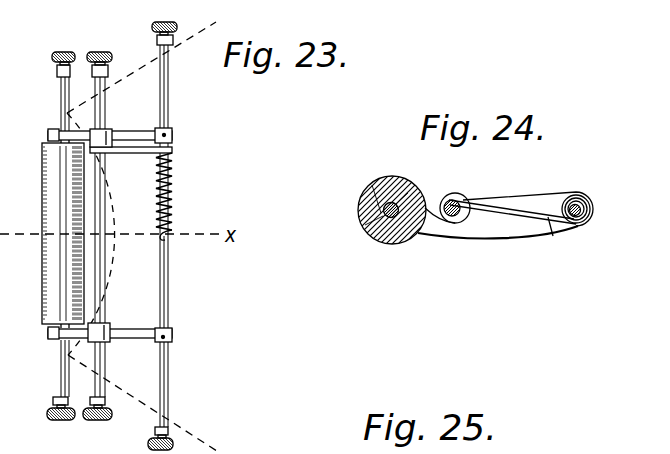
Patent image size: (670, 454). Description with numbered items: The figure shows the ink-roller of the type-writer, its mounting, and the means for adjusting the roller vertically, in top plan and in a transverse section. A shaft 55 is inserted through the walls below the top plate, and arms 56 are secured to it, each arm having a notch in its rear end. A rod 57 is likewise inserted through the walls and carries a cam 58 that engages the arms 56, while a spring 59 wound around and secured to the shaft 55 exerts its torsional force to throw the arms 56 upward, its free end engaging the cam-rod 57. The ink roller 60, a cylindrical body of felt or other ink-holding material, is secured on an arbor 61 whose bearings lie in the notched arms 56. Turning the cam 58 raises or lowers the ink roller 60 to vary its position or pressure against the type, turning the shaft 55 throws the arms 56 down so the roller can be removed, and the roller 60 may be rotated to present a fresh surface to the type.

In FIG. 23, the shaft 55 is at (172, 236).
In FIG. 24, the shaft 55 is at (584, 212).
In FIG. 23, the arms 56 is at (126, 236).
In FIG. 24, the arms 56 is at (505, 229).
In FIG. 23, the rod 57 is at (108, 236).
In FIG. 24, the rod 57 is at (449, 224).
In FIG. 23, the cam 58 is at (105, 130).
In FIG. 24, the cam 58 is at (466, 198).
In FIG. 23, the spring 59 is at (177, 196).
In FIG. 24, the spring 59 is at (557, 241).
In FIG. 23, the ink roller 60 is at (48, 233).
In FIG. 24, the ink roller 60 is at (392, 224).
In FIG. 23, the arbor 61 is at (54, 236).
In FIG. 24, the arbor 61 is at (368, 228).